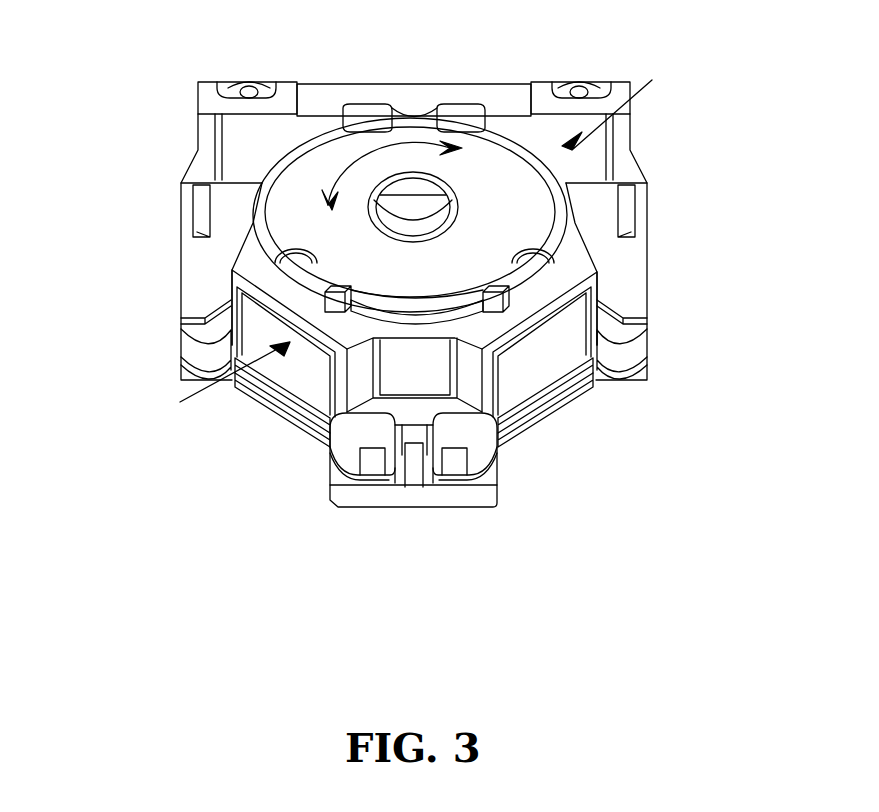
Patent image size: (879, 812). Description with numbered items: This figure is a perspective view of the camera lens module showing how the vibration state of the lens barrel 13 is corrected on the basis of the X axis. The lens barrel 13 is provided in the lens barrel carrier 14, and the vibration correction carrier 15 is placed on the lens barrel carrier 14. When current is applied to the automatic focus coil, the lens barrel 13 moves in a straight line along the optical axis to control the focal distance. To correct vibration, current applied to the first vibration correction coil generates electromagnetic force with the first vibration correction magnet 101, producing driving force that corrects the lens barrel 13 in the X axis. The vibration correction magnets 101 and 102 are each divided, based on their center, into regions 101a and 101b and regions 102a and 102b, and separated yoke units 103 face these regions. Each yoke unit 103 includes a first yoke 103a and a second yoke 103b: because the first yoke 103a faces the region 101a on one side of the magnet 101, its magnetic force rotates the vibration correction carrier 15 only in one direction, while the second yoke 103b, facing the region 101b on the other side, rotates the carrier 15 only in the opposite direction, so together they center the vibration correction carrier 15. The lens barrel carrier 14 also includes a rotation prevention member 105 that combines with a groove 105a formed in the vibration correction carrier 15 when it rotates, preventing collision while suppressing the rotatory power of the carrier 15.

The lens barrel 13 is at (490, 150).
The lens barrel carrier 14 is at (292, 82).
The vibration correction carrier 15 is at (222, 212).
The first vibration correction magnet 101 is at (188, 343).
The region on one side of the first vibration correction magnet 101a is at (232, 295).
The region on the other side of the first vibration correction magnet 101b is at (230, 353).
The second vibration correction magnet 102 is at (638, 323).
The region of the second vibration correction magnet 102a is at (577, 328).
The region of the second vibration correction magnet 102b is at (598, 275).
The yoke unit 103 is at (413, 418).
The first yoke 103a is at (242, 395).
The second yoke 103b is at (280, 432).
The rotation prevention member 105 is at (412, 457).
The groove 105a is at (445, 427).